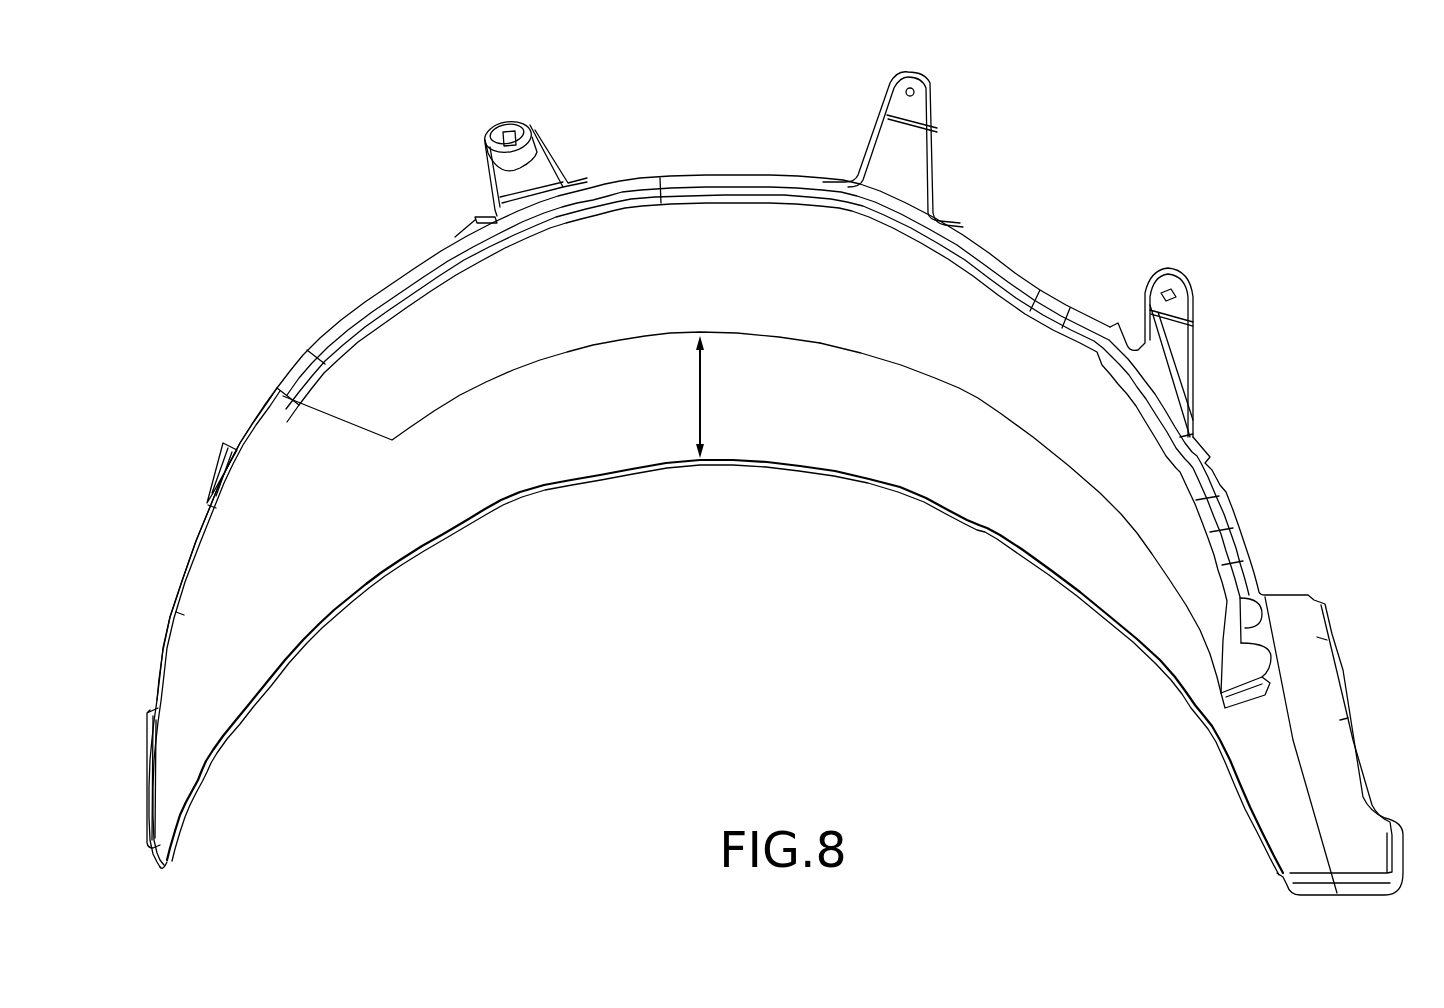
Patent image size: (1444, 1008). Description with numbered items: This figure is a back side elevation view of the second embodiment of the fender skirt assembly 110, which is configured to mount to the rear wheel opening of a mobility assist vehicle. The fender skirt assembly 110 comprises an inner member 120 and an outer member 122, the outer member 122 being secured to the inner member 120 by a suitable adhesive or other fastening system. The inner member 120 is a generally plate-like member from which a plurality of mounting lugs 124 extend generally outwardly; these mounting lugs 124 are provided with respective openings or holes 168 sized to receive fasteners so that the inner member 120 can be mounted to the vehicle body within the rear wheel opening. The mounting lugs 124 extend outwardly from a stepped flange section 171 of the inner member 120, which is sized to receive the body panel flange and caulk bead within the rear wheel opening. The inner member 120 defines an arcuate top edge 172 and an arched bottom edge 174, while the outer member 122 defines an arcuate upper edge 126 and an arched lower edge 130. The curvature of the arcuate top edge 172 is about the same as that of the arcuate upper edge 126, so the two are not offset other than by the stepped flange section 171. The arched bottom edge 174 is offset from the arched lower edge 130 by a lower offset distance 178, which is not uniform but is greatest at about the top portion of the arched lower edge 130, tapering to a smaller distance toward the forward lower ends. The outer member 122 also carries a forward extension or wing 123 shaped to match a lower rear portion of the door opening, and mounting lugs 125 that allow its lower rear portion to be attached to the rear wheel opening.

The fender skirt assembly 110 is at (225, 130).
The inner member 120 is at (621, 344).
The outer member 122 is at (1070, 591).
The forward extension or wing 123 is at (1360, 688).
The mounting lugs 124 is at (520, 126).
The mounting lugs 125 is at (222, 455).
The arcuate upper edge 126 is at (265, 398).
The arched lower edge 130 is at (325, 625).
The openings or holes 168 is at (915, 92).
The stepped flange section 171 is at (700, 205).
The arcuate top edge 172 is at (1030, 265).
The arched bottom edge 174 is at (935, 380).
The lower offset distance 178 is at (700, 385).